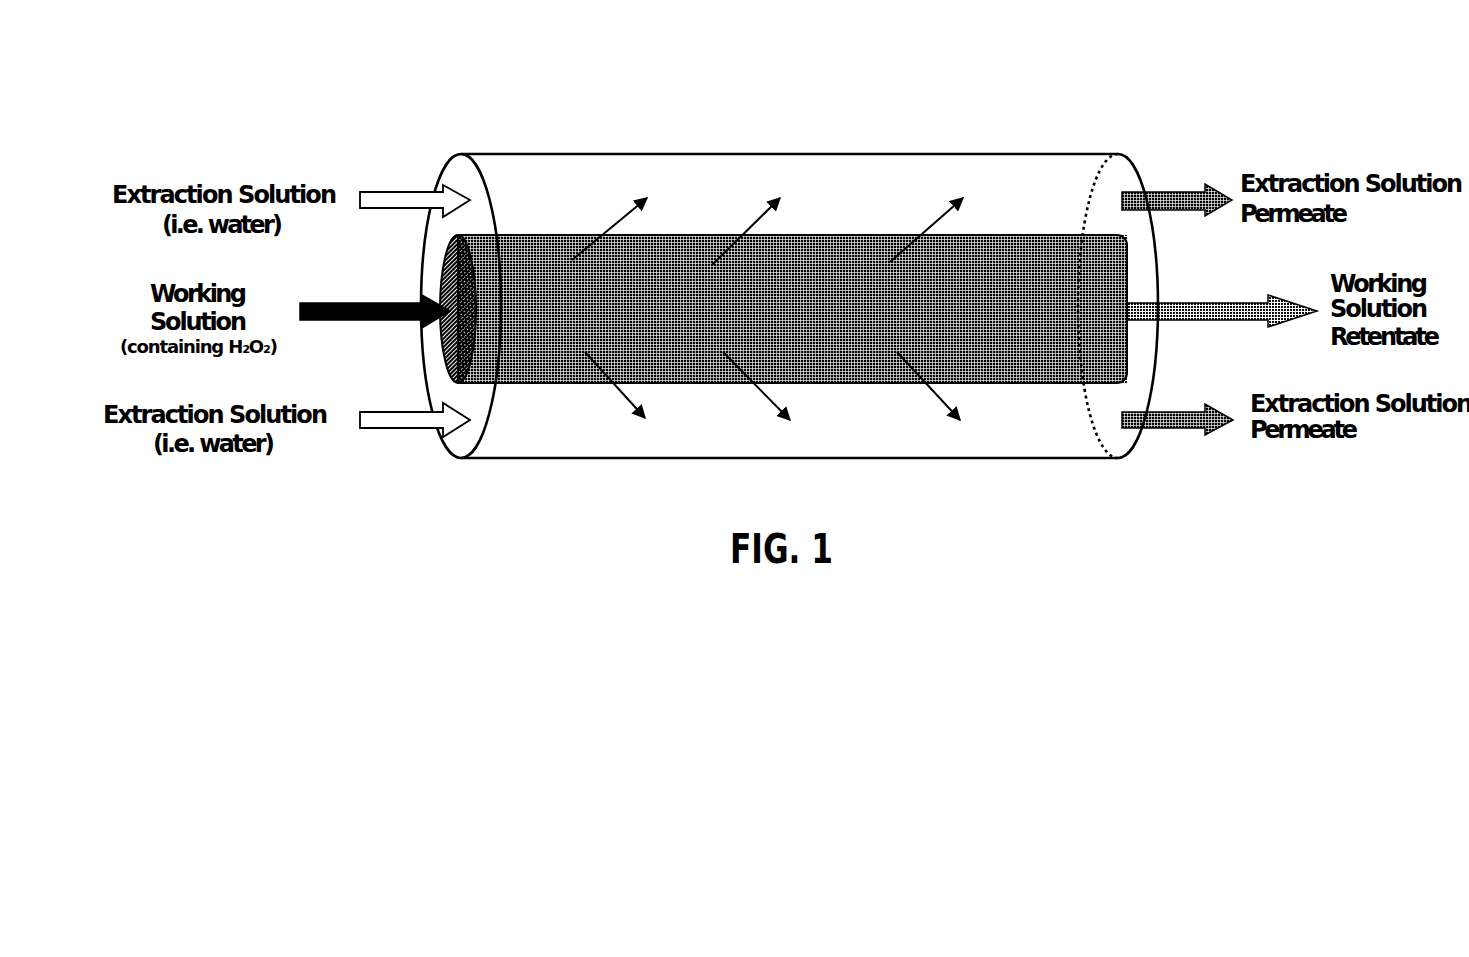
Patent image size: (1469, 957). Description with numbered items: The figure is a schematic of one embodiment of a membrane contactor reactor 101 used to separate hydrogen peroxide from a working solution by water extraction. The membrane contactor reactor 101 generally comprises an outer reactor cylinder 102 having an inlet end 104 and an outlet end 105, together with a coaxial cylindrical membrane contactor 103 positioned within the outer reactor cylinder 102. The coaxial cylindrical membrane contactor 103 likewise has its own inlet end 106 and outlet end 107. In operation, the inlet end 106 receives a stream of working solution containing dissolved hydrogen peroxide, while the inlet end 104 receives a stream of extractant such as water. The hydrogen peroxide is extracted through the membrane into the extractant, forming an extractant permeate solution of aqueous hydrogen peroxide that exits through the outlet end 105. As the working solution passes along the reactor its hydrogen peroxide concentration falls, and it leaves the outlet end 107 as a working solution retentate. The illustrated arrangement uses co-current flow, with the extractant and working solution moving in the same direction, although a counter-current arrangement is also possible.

The membrane contactor reactor 101 is at (773, 324).
The outer reactor cylinder 102 is at (667, 463).
The coaxial cylindrical membrane contactor 103 is at (1027, 252).
The inlet end of outer reactor cylinder 104 is at (462, 462).
The outlet end of outer reactor cylinder 105 is at (1118, 462).
The inlet end of coaxial cylindrical membrane contactor 106 is at (450, 238).
The outlet end of coaxial cylindrical membrane contactor 107 is at (1113, 238).